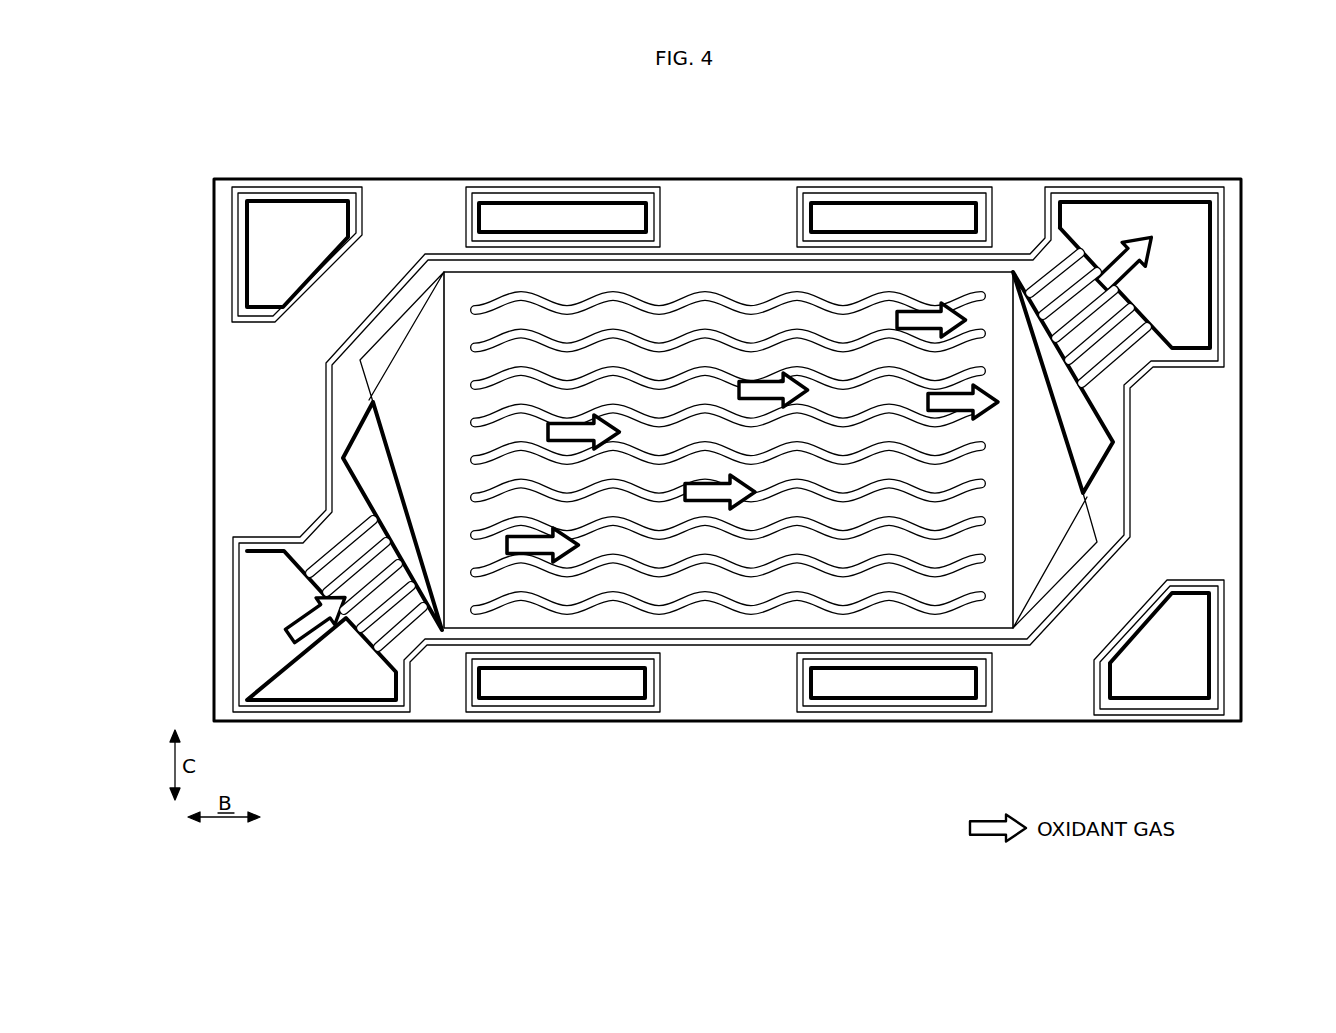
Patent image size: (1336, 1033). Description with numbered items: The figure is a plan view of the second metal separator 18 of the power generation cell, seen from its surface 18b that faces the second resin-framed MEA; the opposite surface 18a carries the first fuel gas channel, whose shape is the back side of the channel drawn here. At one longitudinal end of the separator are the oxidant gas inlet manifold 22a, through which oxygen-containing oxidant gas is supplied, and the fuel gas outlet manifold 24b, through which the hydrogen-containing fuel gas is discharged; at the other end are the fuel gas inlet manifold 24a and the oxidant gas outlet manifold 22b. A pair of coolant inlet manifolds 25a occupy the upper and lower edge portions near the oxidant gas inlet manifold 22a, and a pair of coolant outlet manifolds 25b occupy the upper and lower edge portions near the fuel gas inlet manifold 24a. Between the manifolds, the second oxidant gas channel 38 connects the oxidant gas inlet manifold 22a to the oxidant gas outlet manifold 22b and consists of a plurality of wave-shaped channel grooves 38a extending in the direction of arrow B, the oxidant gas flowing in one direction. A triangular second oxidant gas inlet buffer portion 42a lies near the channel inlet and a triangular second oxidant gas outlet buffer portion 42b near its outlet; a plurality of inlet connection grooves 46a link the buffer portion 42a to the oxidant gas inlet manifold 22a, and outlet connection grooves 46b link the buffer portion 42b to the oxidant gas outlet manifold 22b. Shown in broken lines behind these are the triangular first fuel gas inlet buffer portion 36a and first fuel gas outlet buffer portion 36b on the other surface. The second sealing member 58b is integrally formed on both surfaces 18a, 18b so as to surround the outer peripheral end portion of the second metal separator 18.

The second metal separator 18 is at (423, 122).
The surface of the second metal separator 18a is at (1208, 483).
The surface of the second metal separator 18b is at (1230, 502).
The oxidant gas inlet manifold 22a is at (282, 667).
The oxidant gas outlet manifold 22b is at (1125, 217).
The fuel gas inlet manifold 24a is at (1155, 673).
The fuel gas outlet manifold 24b is at (278, 215).
The coolant inlet manifolds 25a is at (551, 214).
The coolant outlet manifolds 25b is at (885, 216).
The first fuel gas inlet buffer portion 36a is at (1050, 513).
The first fuel gas outlet buffer portion 36b is at (402, 445).
The second oxidant gas channel 38 is at (672, 278).
The wave-shaped channel grooves 38a is at (727, 375).
The second oxidant gas inlet buffer portion 42a is at (403, 395).
The second oxidant gas outlet buffer portion 42b is at (1048, 442).
The inlet connection grooves 46a is at (397, 615).
The outlet connection grooves 46b is at (1053, 293).
The second sealing member 58b is at (640, 724).